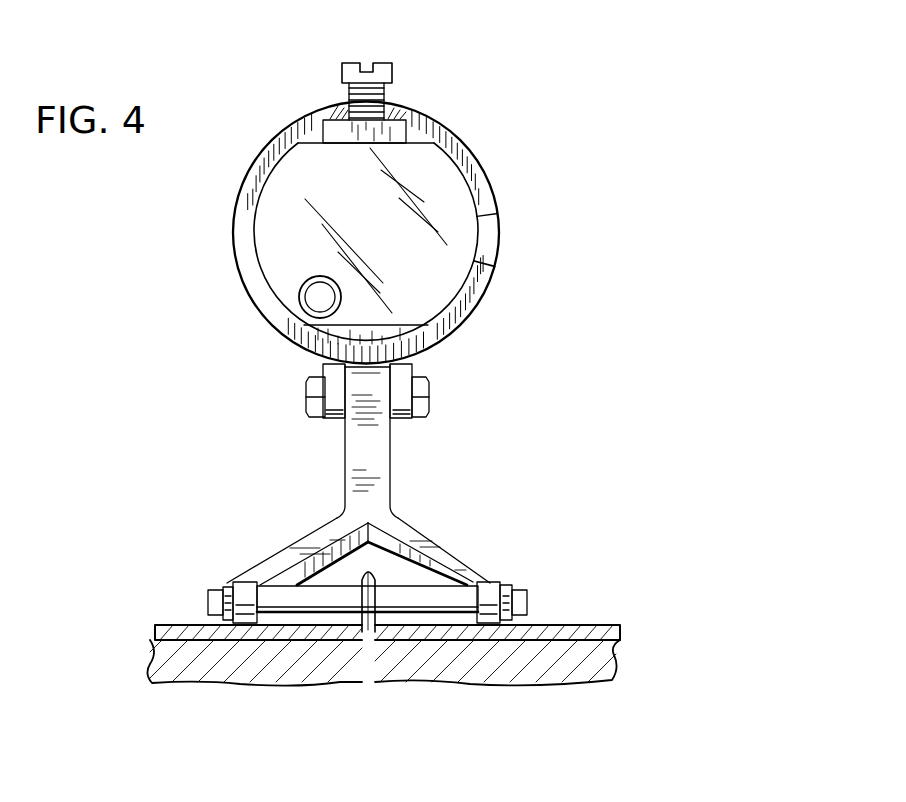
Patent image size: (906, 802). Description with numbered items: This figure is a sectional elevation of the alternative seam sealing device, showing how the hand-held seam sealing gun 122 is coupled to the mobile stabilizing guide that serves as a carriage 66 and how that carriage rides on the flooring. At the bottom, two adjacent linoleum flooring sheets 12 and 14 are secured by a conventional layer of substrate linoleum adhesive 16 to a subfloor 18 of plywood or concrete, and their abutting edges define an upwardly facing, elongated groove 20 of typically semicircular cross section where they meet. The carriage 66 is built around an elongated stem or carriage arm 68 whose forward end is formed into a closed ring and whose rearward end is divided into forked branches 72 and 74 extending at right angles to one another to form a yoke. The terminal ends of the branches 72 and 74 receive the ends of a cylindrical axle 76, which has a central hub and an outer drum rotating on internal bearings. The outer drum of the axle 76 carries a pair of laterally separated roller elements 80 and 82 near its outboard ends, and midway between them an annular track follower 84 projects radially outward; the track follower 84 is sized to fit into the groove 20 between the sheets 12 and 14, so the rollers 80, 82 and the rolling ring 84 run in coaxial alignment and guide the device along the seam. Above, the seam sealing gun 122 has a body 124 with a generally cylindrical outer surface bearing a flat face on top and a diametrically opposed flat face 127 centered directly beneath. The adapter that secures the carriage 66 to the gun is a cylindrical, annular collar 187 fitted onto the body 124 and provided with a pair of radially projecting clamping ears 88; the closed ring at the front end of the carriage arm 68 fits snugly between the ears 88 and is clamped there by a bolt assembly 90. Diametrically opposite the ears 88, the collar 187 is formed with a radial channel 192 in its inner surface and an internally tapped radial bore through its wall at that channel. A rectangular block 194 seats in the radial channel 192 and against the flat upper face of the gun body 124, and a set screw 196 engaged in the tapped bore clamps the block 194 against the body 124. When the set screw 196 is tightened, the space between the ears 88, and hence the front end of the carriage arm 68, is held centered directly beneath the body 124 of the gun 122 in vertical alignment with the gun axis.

The linoleum flooring sheet 12 is at (173, 622).
The linoleum flooring sheet 14 is at (553, 623).
The substrate linoleum adhesive 16 is at (245, 643).
The subfloor 18 is at (533, 667).
The groove 20 is at (357, 643).
The stabilizing guide 66 is at (482, 485).
The carriage arm 68 is at (368, 480).
The forked branch 72 is at (460, 562).
The forked branch 74 is at (330, 531).
The axle 76 is at (298, 590).
The roller element 80 is at (492, 587).
The roller element 82 is at (248, 588).
The track follower 84 is at (382, 584).
The clamping ears 88 is at (329, 391).
The bolt assembly 90 is at (429, 398).
The seam sealing gun 122 is at (470, 182).
The body 124 is at (493, 265).
The flat face 127 is at (324, 318).
The collar 187 is at (500, 216).
The radial channel 192 is at (407, 140).
The rectangular block 194 is at (331, 128).
The set screw 196 is at (384, 63).